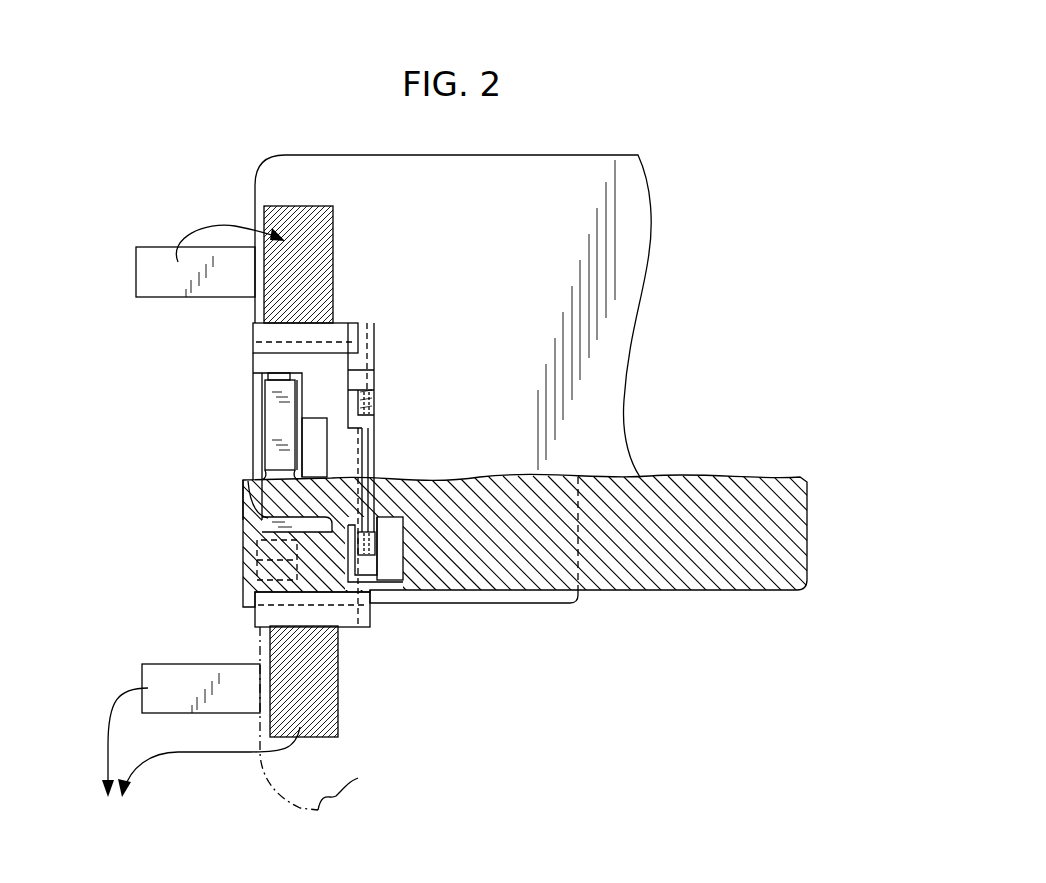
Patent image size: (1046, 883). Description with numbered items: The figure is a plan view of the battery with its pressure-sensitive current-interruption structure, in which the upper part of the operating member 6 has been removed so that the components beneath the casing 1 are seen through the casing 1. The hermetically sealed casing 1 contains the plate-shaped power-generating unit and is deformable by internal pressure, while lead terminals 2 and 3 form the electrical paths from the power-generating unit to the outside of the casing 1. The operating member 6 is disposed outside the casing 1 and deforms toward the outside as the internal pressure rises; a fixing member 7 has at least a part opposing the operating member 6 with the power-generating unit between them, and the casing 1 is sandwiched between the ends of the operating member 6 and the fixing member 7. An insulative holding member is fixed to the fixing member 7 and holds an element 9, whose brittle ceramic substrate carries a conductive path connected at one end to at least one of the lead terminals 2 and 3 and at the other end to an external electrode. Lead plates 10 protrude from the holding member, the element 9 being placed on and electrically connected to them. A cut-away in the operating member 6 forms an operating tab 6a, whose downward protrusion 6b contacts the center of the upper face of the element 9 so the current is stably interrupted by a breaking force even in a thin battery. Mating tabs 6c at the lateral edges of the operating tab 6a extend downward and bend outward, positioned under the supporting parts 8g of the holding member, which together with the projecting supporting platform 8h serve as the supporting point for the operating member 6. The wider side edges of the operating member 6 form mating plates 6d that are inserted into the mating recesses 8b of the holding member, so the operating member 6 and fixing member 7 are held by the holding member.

The casing 1 is at (628, 237).
The lead terminal 2 is at (152, 277).
The lead terminal 3 is at (160, 672).
The operating member 6 is at (737, 565).
The operating tab 6a is at (292, 512).
The protrusion 6b is at (262, 485).
The mating tab 6c is at (370, 544).
The mating plate 6d is at (372, 628).
The fixing member 7 is at (515, 593).
The mating recess 8b is at (273, 352).
The supporting part 8g is at (373, 402).
The supporting platform 8h is at (374, 438).
The element 9 is at (273, 422).
The lead plate 10 is at (285, 316).